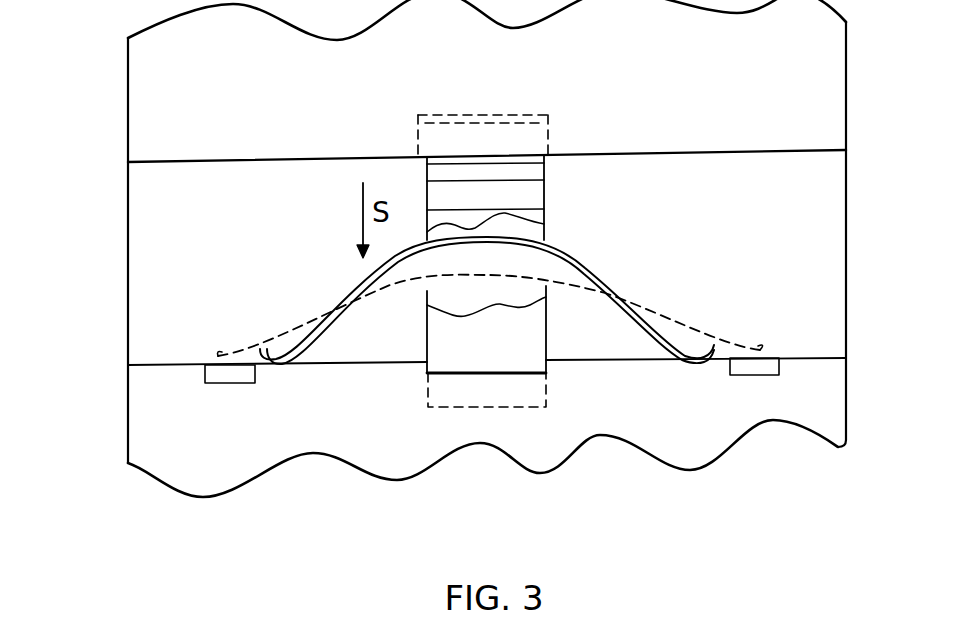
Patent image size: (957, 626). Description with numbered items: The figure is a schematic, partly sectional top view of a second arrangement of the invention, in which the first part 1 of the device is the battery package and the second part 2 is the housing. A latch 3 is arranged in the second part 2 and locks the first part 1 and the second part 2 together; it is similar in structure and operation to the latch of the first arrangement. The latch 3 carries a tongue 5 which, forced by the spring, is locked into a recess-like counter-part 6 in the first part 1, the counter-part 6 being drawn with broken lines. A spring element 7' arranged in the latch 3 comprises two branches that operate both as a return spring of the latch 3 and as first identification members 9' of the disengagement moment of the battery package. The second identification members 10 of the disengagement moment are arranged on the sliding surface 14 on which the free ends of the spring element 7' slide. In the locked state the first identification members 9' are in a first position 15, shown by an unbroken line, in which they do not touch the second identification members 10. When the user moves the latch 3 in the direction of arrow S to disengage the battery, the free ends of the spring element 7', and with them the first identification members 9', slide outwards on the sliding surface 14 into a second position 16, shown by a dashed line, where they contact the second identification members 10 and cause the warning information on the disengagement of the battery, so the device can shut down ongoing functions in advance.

The first part of the device 1 is at (105, 15).
The second part of the device 2 is at (105, 170).
The latch 3 is at (556, 202).
The tongue 5 is at (520, 143).
The counter-part of the tongue 6 is at (491, 115).
The spring element 7' is at (300, 308).
The first identification members of the disengagement moment of the battery package 9' is at (490, 297).
The second identification members of the disengagement moment of the battery package 10 is at (226, 376).
The sliding surface 14 is at (799, 343).
The first position 15 is at (592, 263).
The second position 16 is at (690, 322).